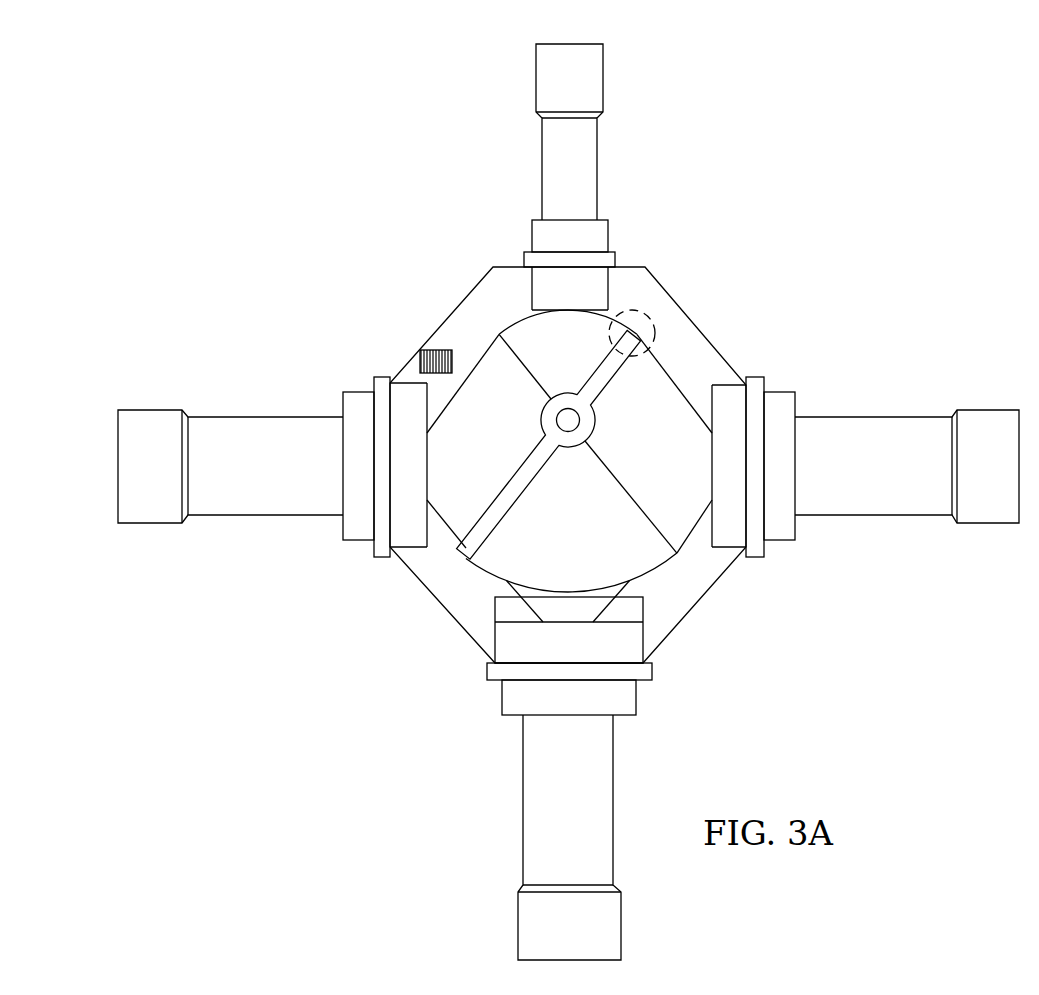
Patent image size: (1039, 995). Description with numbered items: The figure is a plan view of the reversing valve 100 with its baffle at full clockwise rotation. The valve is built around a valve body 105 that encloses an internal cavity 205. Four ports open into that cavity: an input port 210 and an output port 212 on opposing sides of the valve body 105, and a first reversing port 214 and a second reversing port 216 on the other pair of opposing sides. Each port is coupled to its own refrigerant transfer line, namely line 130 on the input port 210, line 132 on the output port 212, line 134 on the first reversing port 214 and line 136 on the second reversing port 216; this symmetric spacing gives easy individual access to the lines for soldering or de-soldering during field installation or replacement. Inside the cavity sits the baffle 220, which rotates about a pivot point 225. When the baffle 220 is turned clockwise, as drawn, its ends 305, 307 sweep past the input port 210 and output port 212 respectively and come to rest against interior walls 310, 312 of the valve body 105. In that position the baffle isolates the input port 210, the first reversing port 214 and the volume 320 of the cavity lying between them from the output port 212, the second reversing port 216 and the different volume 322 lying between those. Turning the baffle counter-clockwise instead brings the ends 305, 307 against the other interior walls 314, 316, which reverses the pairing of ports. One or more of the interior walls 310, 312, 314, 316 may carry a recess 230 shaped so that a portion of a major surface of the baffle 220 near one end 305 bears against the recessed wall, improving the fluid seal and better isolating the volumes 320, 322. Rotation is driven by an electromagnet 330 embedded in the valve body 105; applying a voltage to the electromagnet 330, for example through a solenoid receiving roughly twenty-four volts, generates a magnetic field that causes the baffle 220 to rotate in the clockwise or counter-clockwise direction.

The reversing valve 100 is at (324, 193).
The valve body 105 is at (654, 632).
The refrigerant transfer line 130 is at (551, 78).
The refrigerant transfer line 132 is at (537, 927).
The refrigerant transfer line 134 is at (150, 502).
The refrigerant transfer line 136 is at (988, 503).
The internal cavity 205 is at (560, 498).
The input port 210 is at (526, 258).
The output port 212 is at (487, 672).
The first reversing port 214 is at (374, 548).
The second reversing port 216 is at (767, 550).
The baffle 220 is at (535, 467).
The pivot point 225 is at (562, 422).
The recess 230 is at (496, 323).
The end of the baffle 305 is at (643, 315).
The end of the baffle 307 is at (463, 563).
The interior wall 310 is at (604, 339).
The interior wall 312 is at (487, 558).
The interior wall 314 is at (512, 340).
The interior wall 316 is at (660, 552).
The volume of the internal cavity 320 is at (440, 493).
The different volume of the internal cavity 322 is at (659, 476).
The electromagnet 330 is at (420, 356).